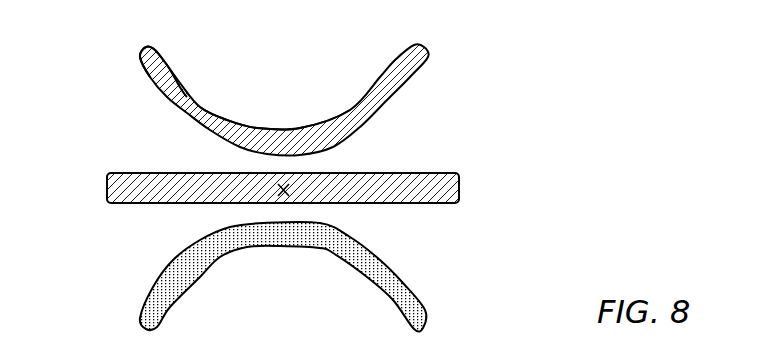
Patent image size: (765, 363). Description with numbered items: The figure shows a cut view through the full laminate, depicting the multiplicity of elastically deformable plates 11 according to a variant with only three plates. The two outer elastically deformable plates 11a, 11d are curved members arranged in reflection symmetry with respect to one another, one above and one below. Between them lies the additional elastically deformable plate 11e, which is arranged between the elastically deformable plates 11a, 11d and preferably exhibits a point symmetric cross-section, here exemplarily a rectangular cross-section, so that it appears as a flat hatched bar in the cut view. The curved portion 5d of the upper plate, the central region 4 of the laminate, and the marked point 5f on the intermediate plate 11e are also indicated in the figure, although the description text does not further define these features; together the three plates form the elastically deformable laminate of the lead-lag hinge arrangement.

The elastically deformable plates 11 is at (455, 44).
The elastically deformable plate 11a is at (136, 65).
The upper curved portion 5d is at (190, 40).
The central portion 4 is at (280, 113).
The elastically deformable plate 11e is at (104, 191).
The contact point 5f is at (294, 188).
The elastically deformable plate 11d is at (421, 292).